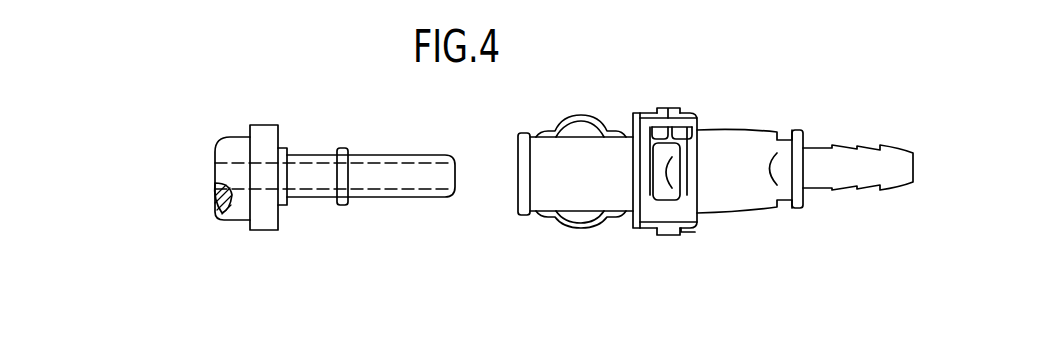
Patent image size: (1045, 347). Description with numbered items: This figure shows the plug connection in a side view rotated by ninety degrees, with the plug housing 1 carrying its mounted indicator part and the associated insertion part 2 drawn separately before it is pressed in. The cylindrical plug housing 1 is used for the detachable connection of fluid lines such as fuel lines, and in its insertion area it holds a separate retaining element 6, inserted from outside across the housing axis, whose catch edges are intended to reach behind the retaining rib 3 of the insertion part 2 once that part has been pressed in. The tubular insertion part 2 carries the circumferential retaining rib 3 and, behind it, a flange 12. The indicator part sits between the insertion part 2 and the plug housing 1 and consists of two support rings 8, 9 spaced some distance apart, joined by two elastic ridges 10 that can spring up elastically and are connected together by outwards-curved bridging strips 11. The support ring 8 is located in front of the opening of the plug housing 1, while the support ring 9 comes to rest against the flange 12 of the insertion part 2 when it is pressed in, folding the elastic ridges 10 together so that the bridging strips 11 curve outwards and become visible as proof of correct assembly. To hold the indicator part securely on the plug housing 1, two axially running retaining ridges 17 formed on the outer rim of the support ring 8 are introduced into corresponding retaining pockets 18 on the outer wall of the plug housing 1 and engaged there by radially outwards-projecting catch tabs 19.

The plug housing 1 is at (750, 205).
The insertion part 2 is at (407, 195).
The retaining rib 3 is at (347, 200).
The retaining element 6 is at (676, 167).
The support ring 8 is at (631, 124).
The support ring 9 is at (517, 139).
The elastic ridges 10 is at (543, 215).
The bridging strips 11 is at (580, 229).
The flange 12 is at (283, 216).
The retaining ridges 17 is at (643, 231).
The retaining pockets 18 is at (666, 107).
The catch tabs 19 is at (684, 233).